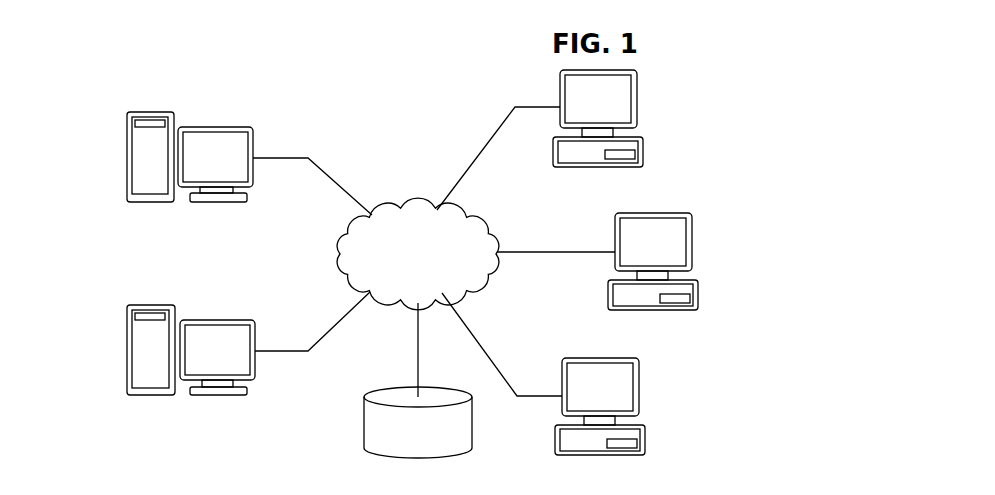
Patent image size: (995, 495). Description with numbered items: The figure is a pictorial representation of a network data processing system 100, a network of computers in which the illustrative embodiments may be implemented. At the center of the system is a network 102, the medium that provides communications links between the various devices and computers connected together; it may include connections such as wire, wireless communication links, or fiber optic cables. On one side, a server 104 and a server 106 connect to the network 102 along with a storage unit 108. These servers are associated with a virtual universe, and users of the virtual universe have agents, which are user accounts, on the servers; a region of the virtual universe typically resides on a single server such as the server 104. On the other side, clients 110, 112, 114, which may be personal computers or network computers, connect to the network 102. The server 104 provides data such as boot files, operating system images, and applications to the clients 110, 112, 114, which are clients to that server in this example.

The network data processing system 100 is at (316, 85).
The network 102 is at (412, 206).
The server 104 is at (127, 158).
The server 106 is at (127, 350).
The storage unit 108 is at (364, 425).
The client 110 is at (643, 150).
The client 112 is at (698, 296).
The client 114 is at (645, 443).